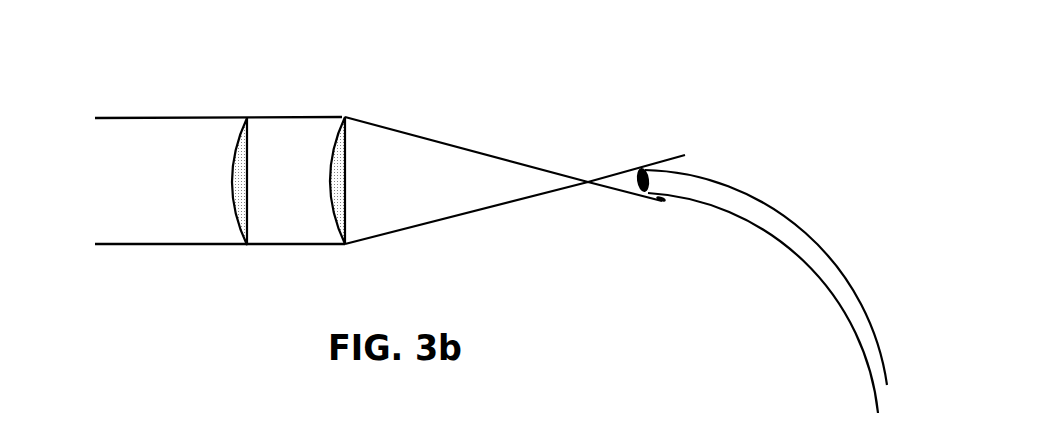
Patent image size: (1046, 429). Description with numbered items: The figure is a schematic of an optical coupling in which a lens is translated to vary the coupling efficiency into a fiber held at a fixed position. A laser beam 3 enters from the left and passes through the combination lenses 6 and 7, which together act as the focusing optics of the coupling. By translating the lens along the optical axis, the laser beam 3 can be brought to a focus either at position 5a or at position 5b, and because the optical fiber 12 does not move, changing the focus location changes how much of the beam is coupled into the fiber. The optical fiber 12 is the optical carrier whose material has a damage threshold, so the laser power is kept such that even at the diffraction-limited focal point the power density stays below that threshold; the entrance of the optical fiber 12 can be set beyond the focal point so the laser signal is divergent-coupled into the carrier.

The laser beam 3 is at (131, 118).
The combination lens 6 is at (246, 120).
The combination lens 7 is at (342, 118).
The focus position 5a is at (482, 182).
The focus position 5b is at (588, 182).
The optical fiber 12 is at (747, 195).